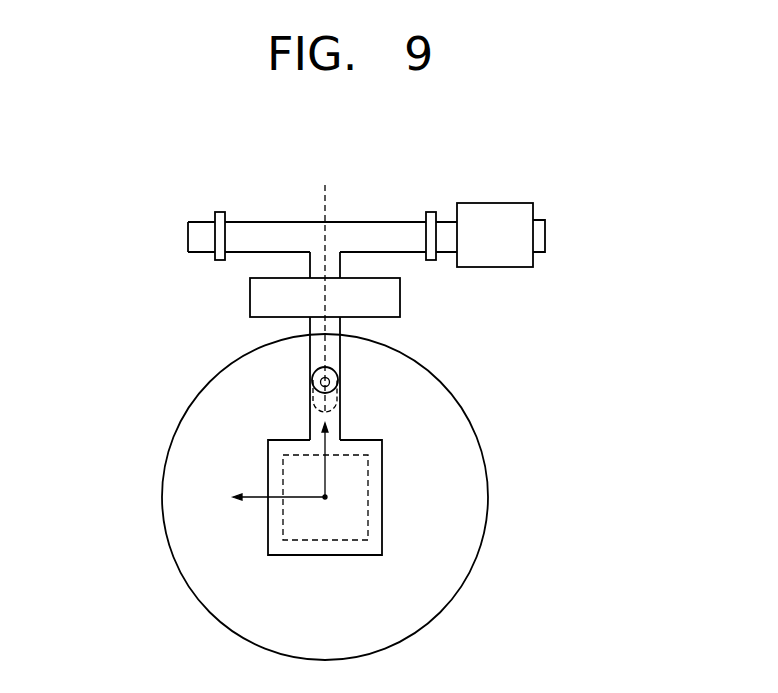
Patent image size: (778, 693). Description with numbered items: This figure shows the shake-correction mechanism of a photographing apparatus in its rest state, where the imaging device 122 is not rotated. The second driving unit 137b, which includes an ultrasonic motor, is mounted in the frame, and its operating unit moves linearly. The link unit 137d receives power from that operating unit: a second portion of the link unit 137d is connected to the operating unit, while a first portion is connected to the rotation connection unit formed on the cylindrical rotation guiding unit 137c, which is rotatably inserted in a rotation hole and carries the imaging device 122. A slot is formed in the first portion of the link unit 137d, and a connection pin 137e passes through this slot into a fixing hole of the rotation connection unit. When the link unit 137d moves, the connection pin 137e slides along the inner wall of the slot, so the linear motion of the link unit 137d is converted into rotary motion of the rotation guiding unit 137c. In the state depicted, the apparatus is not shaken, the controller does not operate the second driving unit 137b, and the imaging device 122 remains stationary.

The second driving unit 137b is at (495, 218).
The link unit 137d is at (390, 300).
The connection pin 137e is at (340, 382).
The imaging device 122 is at (382, 502).
The rotation guiding unit 137c is at (450, 568).